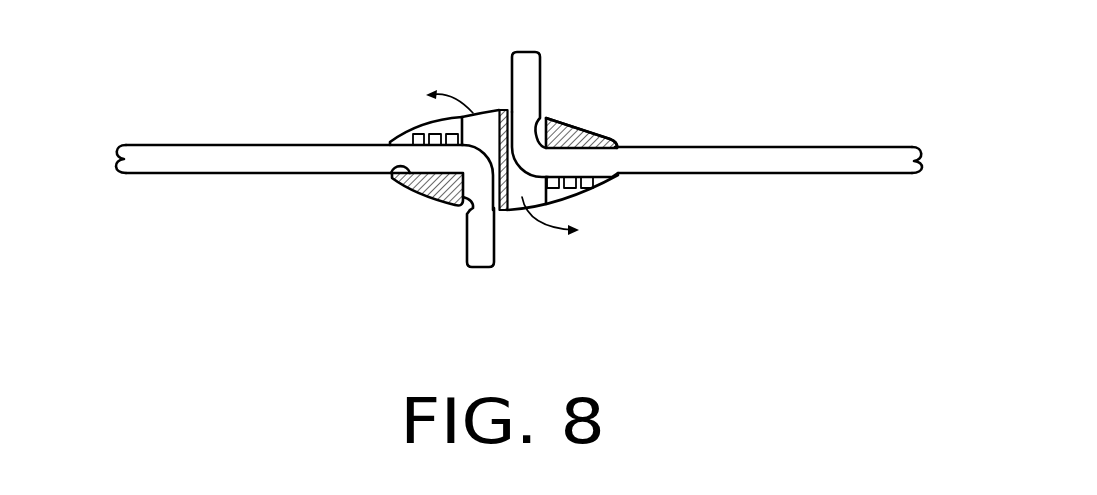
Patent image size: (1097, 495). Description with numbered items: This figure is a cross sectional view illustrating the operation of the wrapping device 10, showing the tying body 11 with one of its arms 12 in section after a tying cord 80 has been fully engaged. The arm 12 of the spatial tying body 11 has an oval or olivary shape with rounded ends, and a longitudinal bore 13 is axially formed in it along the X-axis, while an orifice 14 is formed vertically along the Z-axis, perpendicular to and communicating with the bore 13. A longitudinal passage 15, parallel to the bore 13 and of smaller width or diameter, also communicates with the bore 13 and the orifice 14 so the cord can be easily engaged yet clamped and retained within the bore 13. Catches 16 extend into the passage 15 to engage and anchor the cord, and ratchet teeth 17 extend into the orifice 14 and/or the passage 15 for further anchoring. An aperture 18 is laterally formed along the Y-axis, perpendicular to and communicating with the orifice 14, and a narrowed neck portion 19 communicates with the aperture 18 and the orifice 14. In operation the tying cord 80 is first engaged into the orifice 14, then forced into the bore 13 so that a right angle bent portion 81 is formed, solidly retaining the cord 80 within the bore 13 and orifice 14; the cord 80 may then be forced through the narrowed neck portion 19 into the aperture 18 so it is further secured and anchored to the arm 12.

The wrapping device 10 is at (578, 118).
The tying body 11 is at (502, 110).
The arm 12 is at (613, 127).
The longitudinal bore 13 is at (387, 173).
The orifice 14 is at (483, 133).
The longitudinal passage 15 is at (572, 197).
The catch 16 is at (608, 182).
The ratchet teeth 17 is at (417, 130).
The aperture 18 is at (455, 203).
The narrowed neck portion 19 is at (482, 207).
The tying cord 80 is at (797, 158).
The right angle bent portion 81 is at (541, 113).